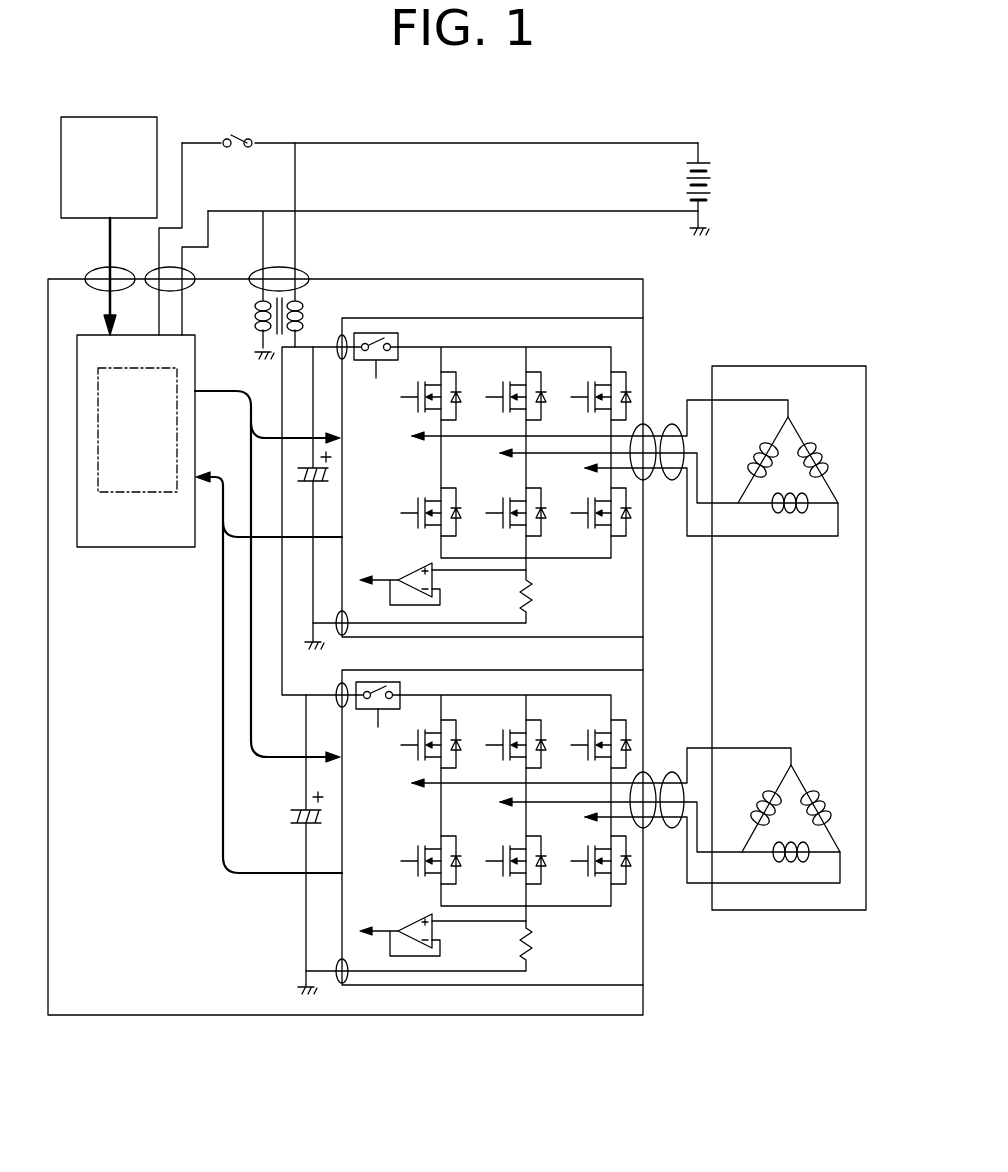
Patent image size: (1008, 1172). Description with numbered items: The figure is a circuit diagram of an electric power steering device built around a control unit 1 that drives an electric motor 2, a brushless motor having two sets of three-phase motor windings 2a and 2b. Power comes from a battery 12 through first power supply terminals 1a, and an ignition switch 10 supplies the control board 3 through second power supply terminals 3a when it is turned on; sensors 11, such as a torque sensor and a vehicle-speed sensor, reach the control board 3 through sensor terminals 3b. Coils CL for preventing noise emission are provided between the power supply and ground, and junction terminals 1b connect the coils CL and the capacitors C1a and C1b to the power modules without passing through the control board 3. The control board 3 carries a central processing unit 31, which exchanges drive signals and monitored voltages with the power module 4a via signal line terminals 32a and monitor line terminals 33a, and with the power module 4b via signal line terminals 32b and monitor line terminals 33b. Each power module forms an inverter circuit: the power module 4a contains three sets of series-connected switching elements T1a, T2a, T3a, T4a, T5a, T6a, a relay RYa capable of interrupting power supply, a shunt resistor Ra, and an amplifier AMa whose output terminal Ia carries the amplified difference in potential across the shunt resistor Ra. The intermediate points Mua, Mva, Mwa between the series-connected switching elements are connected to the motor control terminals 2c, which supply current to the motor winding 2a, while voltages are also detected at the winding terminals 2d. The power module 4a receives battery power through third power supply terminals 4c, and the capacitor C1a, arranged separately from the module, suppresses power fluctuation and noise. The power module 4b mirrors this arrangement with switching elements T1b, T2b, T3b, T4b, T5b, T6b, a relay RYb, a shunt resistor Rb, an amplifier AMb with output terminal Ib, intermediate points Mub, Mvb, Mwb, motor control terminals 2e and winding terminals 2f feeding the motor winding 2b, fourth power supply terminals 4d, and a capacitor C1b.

The control unit 1 is at (308, 1015).
The first power supply terminals 1a is at (300, 273).
The junction terminals 1b is at (285, 378).
The electric motor 2 is at (745, 366).
The motor winding 2a is at (785, 512).
The motor winding 2b is at (812, 785).
The motor control terminals 2c is at (650, 423).
The winding terminals 2d is at (675, 423).
The motor control terminals 2e is at (650, 771).
The winding terminals 2f is at (675, 771).
The control board 3 is at (165, 547).
The second power supply terminals 3a is at (195, 273).
The sensor terminals 3b is at (97, 273).
The power module 4a is at (575, 318).
The power module 4b is at (340, 890).
The third power supply terminals 4c is at (343, 337).
The fourth power supply terminals 4d is at (340, 695).
The switch 10 is at (253, 140).
The sensors 11 is at (158, 122).
The battery 12 is at (715, 175).
The central processing unit 31 is at (118, 492).
The signal line terminals 32a is at (337, 438).
The signal line terminals 32b is at (250, 700).
The monitor line terminals 33a is at (340, 537).
The monitor line terminals 33b is at (222, 765).
The coils CL is at (263, 316).
The relay RYa is at (400, 337).
The relay RYb is at (400, 683).
The capacitor C1a is at (342, 498).
The capacitor C1b is at (293, 844).
The switching element T1a is at (421, 393).
The switching element T2a is at (421, 520).
The switching element T3a is at (505, 393).
The switching element T4a is at (505, 520).
The switching element T5a is at (590, 393).
The switching element T6a is at (590, 520).
The switching element T1b is at (431, 738).
The switching element T2b is at (421, 866).
The switching element T3b is at (505, 738).
The switching element T4b is at (506, 866).
The switching element T5b is at (591, 738).
The switching element T6b is at (591, 866).
The intermediate point Mua is at (583, 430).
The intermediate point Mva is at (598, 475).
The intermediate point Mwa is at (688, 499).
The intermediate point Mub is at (585, 776).
The intermediate point Mvb is at (601, 823).
The intermediate point Mwb is at (690, 846).
The shunt resistor Ra is at (422, 590).
The shunt resistor Rb is at (419, 938).
The output terminal Ia is at (443, 578).
The output terminal Ib is at (443, 925).
The amplifier AMa is at (365, 619).
The amplifier AMb is at (366, 966).